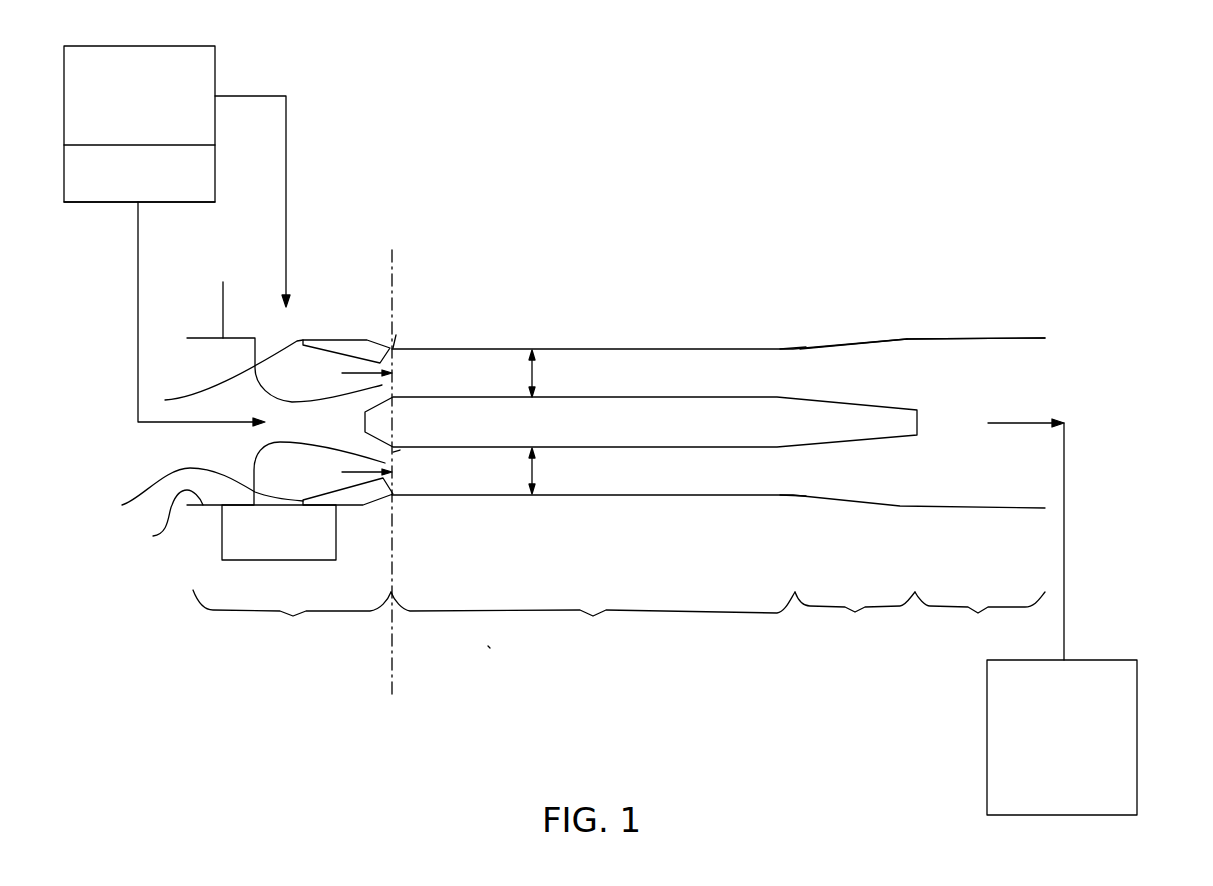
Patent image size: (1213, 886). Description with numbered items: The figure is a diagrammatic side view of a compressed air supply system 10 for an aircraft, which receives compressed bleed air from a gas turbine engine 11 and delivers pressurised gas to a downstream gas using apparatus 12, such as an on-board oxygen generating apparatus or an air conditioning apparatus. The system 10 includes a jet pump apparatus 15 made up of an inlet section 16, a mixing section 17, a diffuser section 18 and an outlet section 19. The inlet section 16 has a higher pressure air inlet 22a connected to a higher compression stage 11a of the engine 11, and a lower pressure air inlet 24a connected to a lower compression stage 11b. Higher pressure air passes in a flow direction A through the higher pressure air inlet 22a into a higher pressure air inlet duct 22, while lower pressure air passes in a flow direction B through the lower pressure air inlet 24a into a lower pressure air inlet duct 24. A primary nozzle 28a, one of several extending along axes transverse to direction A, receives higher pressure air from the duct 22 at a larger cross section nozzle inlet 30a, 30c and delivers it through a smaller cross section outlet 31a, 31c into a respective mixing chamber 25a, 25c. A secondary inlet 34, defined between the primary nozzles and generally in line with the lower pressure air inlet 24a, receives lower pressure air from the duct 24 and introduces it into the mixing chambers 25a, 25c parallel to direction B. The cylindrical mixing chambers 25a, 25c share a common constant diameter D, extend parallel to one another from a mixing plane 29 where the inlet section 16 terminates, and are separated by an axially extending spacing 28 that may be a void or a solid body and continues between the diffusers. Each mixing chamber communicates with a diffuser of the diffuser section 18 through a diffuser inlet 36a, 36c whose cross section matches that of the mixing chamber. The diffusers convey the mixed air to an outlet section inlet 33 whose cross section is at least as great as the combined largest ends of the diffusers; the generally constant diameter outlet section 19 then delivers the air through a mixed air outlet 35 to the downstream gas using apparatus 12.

The compressed air supply system 10 is at (498, 640).
The gas turbine engine 11 is at (202, 124).
The higher compression stage 11a is at (164, 104).
The lower compression stage 11b is at (164, 182).
The downstream gas using apparatus 12 is at (1122, 657).
The jet pump apparatus 15 is at (562, 332).
The inlet section 16 is at (292, 617).
The mixing section 17 is at (593, 618).
The diffuser section 18 is at (855, 613).
The outlet section 19 is at (980, 618).
The higher pressure air inlet duct 22 is at (228, 311).
The higher pressure air inlet 22a is at (338, 340).
The lower pressure air inlet duct 24 is at (153, 536).
The lower pressure air inlet 24a is at (203, 339).
The mixing chamber 25a is at (684, 387).
The mixing chamber 25c is at (684, 484).
The axially extending spacing 28 is at (641, 422).
The primary nozzle 28a is at (341, 354).
The mixing plane 29 is at (394, 276).
The nozzle inlet 30a is at (165, 400).
The nozzle inlet 30c is at (122, 505).
The nozzle outlet 31a is at (396, 335).
The nozzle outlet 31c is at (393, 452).
The outlet section inlet 33 is at (907, 338).
The secondary inlet 34 is at (320, 424).
The mixed air outlet 35 is at (1045, 338).
The diffuser inlet 36a is at (797, 349).
The diffuser inlet 36c is at (793, 496).
The higher pressure air flow direction A is at (286, 160).
The lower pressure air flow direction B is at (163, 427).
The diameter D is at (546, 424).